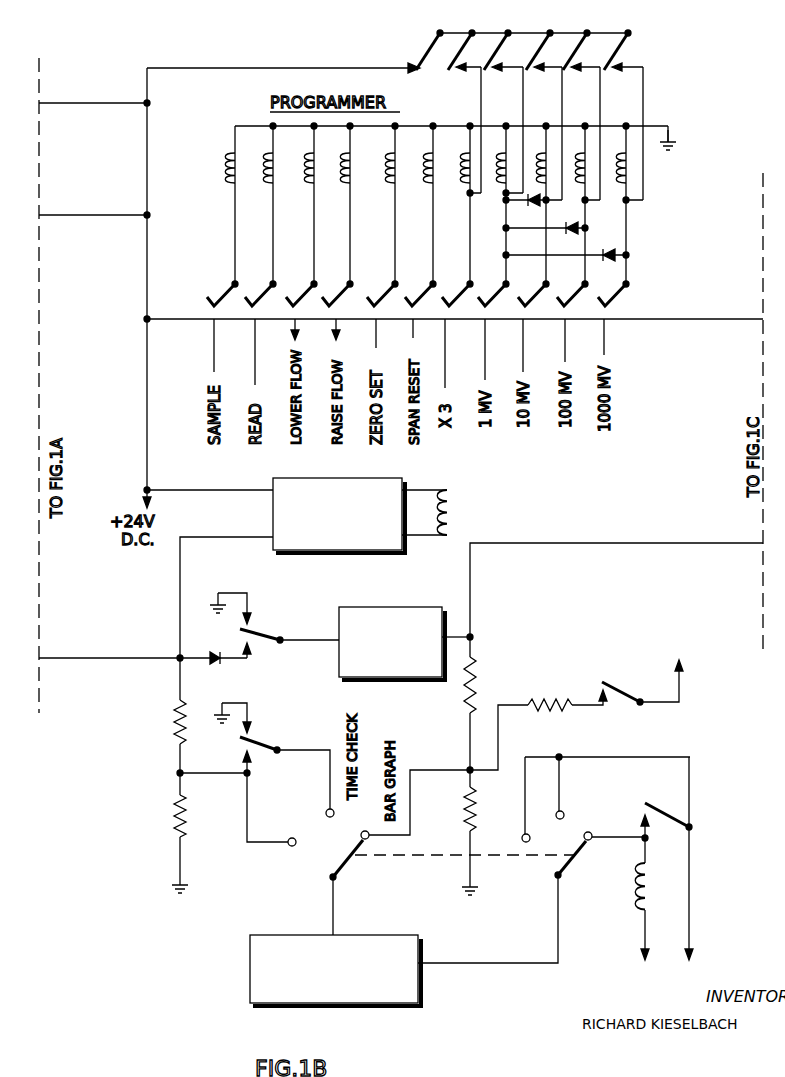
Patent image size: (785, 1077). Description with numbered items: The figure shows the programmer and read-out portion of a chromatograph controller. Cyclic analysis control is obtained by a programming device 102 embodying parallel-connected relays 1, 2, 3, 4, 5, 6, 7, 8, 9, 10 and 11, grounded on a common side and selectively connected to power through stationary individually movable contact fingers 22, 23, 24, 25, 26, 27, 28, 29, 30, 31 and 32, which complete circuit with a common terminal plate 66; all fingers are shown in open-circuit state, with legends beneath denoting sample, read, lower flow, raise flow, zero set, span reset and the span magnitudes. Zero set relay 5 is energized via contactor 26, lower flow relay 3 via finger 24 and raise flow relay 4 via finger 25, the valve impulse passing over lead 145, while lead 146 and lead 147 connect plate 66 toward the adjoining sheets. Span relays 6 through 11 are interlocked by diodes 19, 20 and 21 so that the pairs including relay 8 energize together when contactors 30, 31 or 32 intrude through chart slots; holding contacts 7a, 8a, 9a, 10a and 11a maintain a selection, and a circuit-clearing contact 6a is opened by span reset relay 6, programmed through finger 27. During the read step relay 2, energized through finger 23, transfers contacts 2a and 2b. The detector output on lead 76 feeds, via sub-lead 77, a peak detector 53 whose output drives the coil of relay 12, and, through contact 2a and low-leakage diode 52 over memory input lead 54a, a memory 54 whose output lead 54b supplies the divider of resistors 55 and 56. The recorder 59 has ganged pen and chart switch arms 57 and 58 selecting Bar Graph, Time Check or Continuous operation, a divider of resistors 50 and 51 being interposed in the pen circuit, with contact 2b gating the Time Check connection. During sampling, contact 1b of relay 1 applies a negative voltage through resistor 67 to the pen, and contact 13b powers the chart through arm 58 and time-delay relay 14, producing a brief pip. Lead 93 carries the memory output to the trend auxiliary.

The sampling relay 1 is at (223, 205).
The read relay 2 is at (262, 203).
The lower flow relay 3 is at (302, 203).
The raise flow relay 4 is at (339, 203).
The zero set relay 5 is at (382, 203).
The span reset relay 6 is at (421, 203).
The span selection relay 7 is at (463, 203).
The span selection relay 8 is at (504, 203).
The span selection relay 9 is at (543, 203).
The span selection relay 10 is at (578, 203).
The span selection relay 11 is at (622, 203).
The circuit-clearing contact 6a is at (433, 34).
The holding contact 7a is at (470, 32).
The holding contact 8a is at (508, 32).
The holding contact 9a is at (548, 32).
The holding contact 10a is at (588, 32).
The holding contact 11a is at (630, 32).
The peak detector relay 12 is at (426, 524).
The relay contact 13b is at (664, 808).
The time-delay relay 14 is at (642, 916).
The diode 19 is at (530, 204).
The diode 20 is at (572, 229).
The diode 21 is at (610, 251).
The contact finger 22 is at (228, 289).
The contact finger 23 is at (266, 289).
The contact finger 24 is at (307, 289).
The contact finger 25 is at (343, 289).
The contact finger 26 is at (388, 289).
The contact finger 27 is at (426, 289).
The contact finger 28 is at (463, 289).
The contact finger 29 is at (499, 289).
The contact finger 30 is at (539, 289).
The contact finger 31 is at (578, 289).
The contact finger 32 is at (619, 289).
The relay contact 1b is at (622, 700).
The relay contact 2a is at (269, 633).
The relay contact 2b is at (264, 746).
The resistor 50 is at (172, 727).
The resistor 51 is at (172, 818).
The diode 52 is at (219, 664).
The peak detector 53 is at (271, 480).
The memory 54 is at (384, 606).
The memory input lead 54a is at (310, 644).
The memory output lead 54b is at (472, 634).
The resistor 55 is at (462, 699).
The resistor 56 is at (466, 809).
The pen switch arm 57 is at (352, 866).
The chart switch arm 58 is at (575, 866).
The recorder 59 is at (250, 954).
The common terminal plate 66 is at (190, 320).
The resistor 67 is at (562, 714).
The lead 76 is at (127, 661).
The sub-lead 77 is at (180, 562).
The lead 93 is at (580, 543).
The programming device 102 is at (212, 134).
The lead 145 is at (130, 107).
The line 146 is at (126, 219).
The lead 147 is at (730, 320).